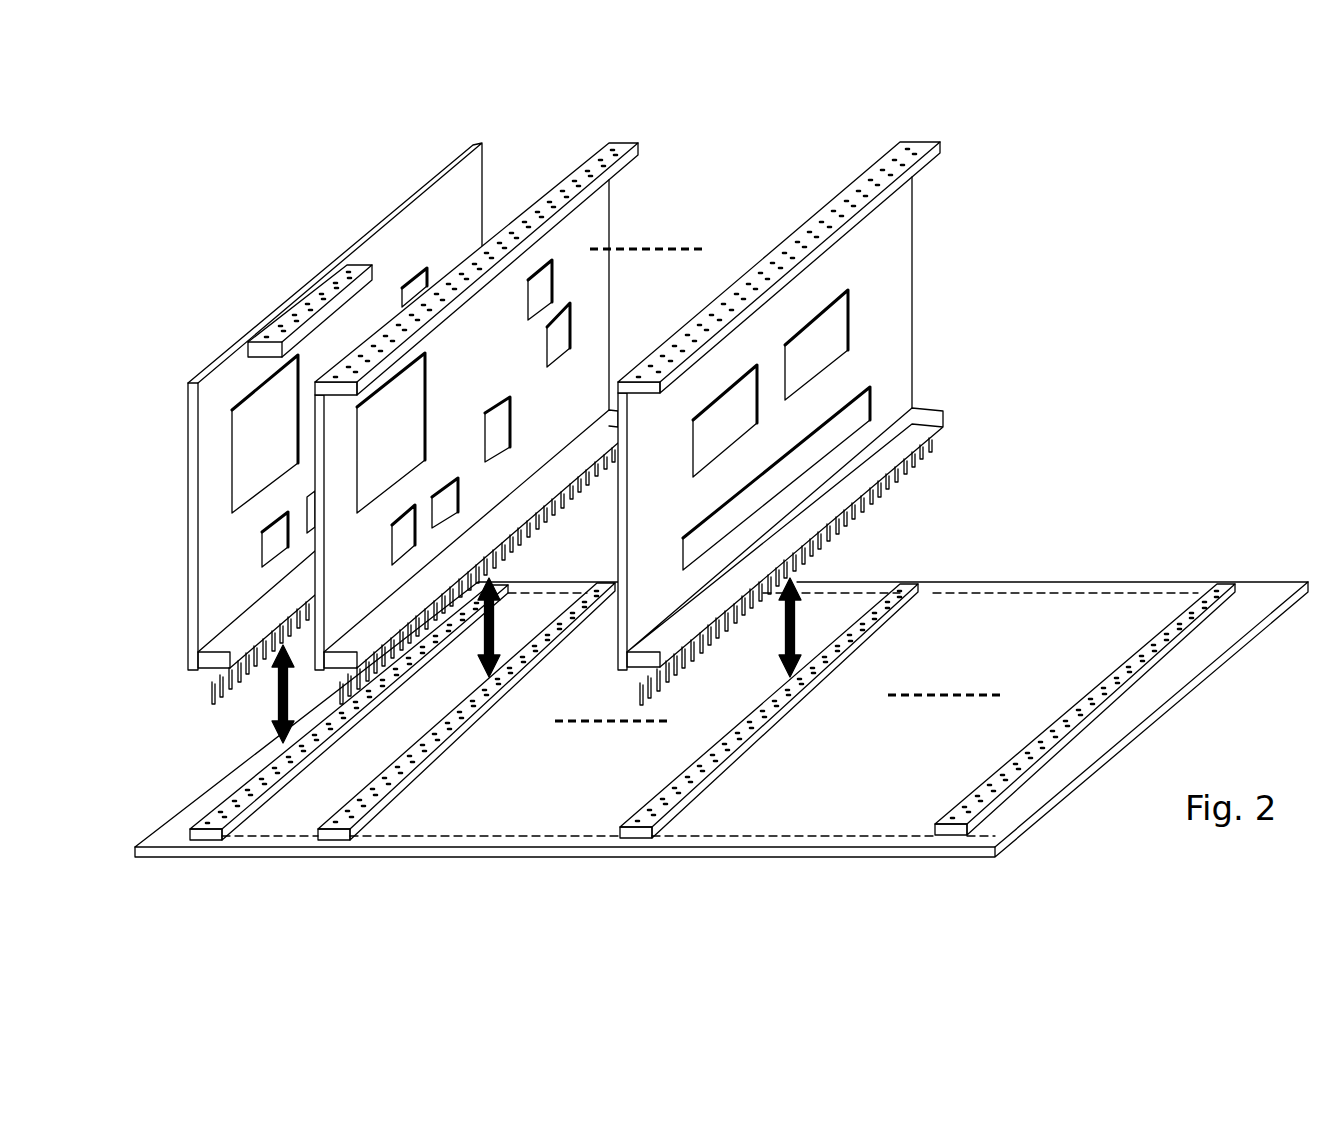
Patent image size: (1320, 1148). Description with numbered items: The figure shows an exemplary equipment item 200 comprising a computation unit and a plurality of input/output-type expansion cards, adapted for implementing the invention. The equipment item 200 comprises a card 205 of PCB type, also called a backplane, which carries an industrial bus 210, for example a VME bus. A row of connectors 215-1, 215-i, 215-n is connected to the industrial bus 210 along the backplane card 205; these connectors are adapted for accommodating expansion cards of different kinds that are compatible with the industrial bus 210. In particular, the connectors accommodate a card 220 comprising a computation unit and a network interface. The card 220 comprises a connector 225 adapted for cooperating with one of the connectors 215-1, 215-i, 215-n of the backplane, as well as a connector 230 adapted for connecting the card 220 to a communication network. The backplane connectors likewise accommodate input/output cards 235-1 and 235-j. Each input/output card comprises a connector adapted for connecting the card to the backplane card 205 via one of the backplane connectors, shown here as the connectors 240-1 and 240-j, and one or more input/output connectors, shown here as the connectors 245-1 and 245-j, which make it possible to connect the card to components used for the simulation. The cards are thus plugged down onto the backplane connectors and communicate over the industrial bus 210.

The equipment item 200 is at (1163, 334).
The card 205 is at (197, 808).
The industrial bus 210 is at (430, 840).
The connector 215-1 is at (255, 787).
The connector 215-i is at (718, 778).
The connector 215-n is at (998, 782).
The card 220 is at (482, 165).
The connector 225 is at (212, 663).
The connector 230 is at (302, 302).
The input/output card 235-1 is at (598, 295).
The input/output card 235-j is at (900, 297).
The connector 240-1 is at (520, 528).
The connector 240-j is at (821, 530).
The input/output connector 245-1 is at (620, 150).
The input/output connector 245-j is at (868, 190).